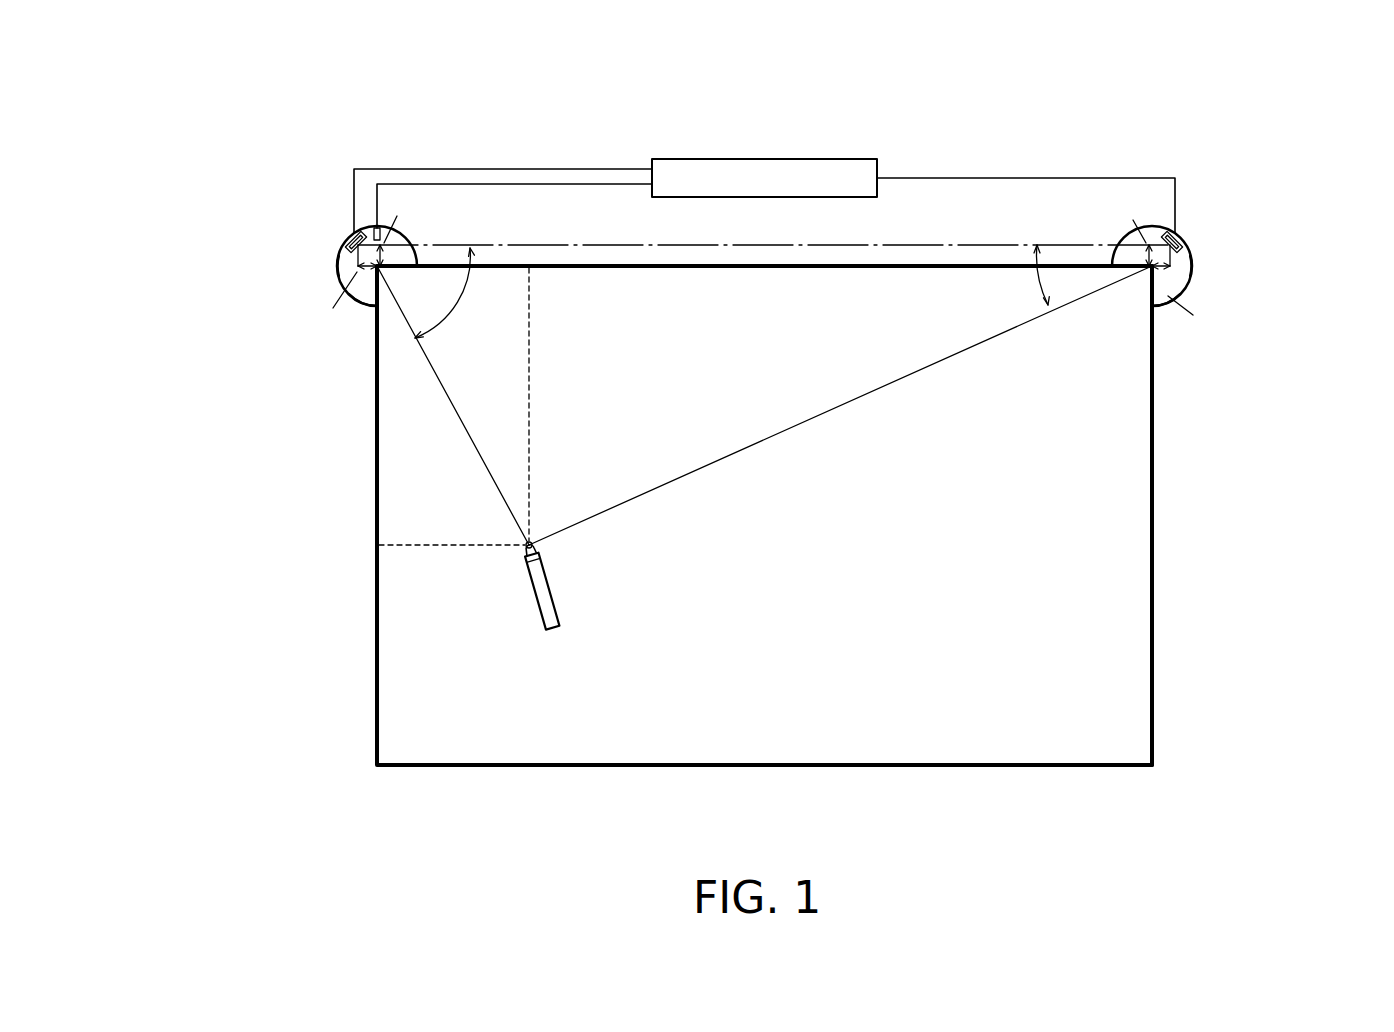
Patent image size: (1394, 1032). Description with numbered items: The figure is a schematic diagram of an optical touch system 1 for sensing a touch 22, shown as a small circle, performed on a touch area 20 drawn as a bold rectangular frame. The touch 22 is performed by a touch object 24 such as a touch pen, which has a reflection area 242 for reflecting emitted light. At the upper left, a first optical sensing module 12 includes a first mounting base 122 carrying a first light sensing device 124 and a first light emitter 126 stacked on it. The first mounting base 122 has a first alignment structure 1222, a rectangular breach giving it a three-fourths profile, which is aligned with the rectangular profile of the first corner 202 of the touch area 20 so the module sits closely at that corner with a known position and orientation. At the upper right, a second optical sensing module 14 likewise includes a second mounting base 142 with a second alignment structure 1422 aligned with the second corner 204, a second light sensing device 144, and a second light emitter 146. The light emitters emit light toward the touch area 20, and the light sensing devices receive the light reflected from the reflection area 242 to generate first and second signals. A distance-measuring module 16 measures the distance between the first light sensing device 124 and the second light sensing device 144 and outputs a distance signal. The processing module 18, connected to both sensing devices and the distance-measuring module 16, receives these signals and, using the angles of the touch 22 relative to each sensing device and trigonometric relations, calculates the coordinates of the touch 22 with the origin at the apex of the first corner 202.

The optical touch system 1 is at (1250, 112).
The first optical sensing module 12 is at (238, 193).
The second optical sensing module 14 is at (1292, 192).
The distance-measuring module 16 is at (372, 230).
The processing module 18 is at (760, 178).
The touch area 20 is at (1112, 590).
The touch 22 is at (540, 535).
The touch object 24 is at (581, 628).
The first mounting base 122 is at (350, 276).
The first light sensing device 124 is at (338, 266).
The first light emitter 126 is at (348, 238).
The second mounting base 142 is at (1180, 278).
The second light sensing device 144 is at (1192, 266).
The second light emitter 146 is at (1183, 238).
The first corner 202 is at (392, 276).
The second corner 204 is at (1146, 275).
The reflection area 242 is at (538, 548).
The first alignment structure 1222 is at (362, 304).
The second alignment structure 1422 is at (1158, 302).